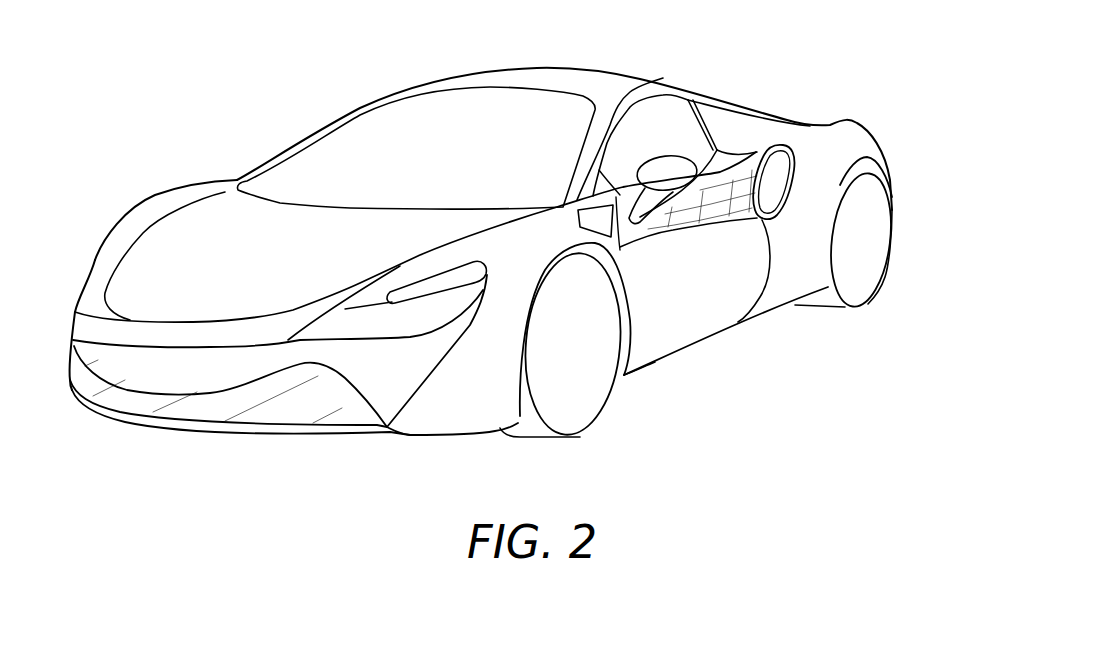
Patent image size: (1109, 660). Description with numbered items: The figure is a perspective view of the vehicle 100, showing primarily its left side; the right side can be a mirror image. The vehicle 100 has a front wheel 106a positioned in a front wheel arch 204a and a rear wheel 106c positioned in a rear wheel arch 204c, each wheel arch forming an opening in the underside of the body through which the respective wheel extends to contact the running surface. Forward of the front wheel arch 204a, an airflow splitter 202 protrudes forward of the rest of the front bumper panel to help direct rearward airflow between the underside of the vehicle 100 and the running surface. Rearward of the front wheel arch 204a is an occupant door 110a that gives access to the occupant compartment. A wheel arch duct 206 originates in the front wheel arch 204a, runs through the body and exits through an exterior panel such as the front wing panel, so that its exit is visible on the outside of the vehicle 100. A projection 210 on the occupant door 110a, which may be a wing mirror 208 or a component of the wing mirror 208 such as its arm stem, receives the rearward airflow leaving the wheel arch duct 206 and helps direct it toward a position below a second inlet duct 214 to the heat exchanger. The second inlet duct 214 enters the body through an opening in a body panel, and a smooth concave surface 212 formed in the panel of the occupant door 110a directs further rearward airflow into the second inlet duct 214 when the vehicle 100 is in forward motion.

The vehicle 100 is at (480, 247).
The airflow splitter 202 is at (183, 425).
The front wheel 106a is at (583, 437).
The rear wheel 106c is at (867, 303).
The occupant door 110a is at (716, 326).
The front wheel arch 204a is at (631, 394).
The rear wheel arch 204c is at (898, 242).
The wheel arch duct 206 is at (589, 220).
The wing mirror 208 is at (663, 162).
The projection 210 is at (592, 190).
The concave surface 212 is at (728, 183).
The second inlet duct 214 is at (780, 155).